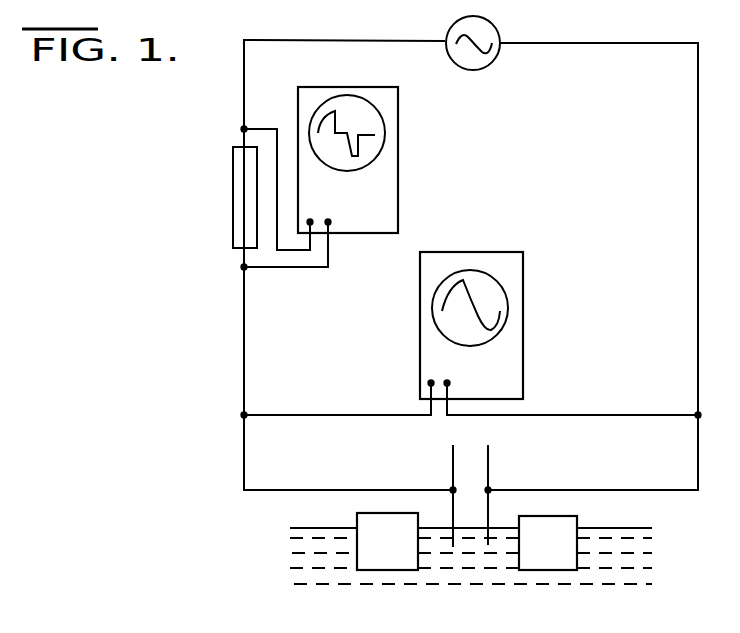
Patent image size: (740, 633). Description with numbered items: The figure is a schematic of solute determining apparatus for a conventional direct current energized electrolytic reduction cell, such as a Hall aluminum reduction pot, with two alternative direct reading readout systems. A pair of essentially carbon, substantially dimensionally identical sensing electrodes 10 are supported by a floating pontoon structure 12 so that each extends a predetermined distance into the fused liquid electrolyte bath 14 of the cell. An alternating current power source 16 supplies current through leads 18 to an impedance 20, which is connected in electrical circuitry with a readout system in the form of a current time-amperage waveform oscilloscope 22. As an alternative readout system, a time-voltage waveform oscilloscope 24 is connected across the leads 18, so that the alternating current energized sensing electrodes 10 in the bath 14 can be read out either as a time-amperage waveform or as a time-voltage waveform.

The sensing electrodes 10 is at (488, 459).
The floating pontoon structure 12 is at (403, 550).
The fused liquid electrolyte bath 14 is at (597, 565).
The alternating current power source 16 is at (503, 31).
The leads 18 is at (294, 40).
The impedance 20 is at (233, 201).
The current time-amperage waveform oscilloscope 22 is at (372, 207).
The time-voltage waveform oscilloscope 24 is at (499, 380).